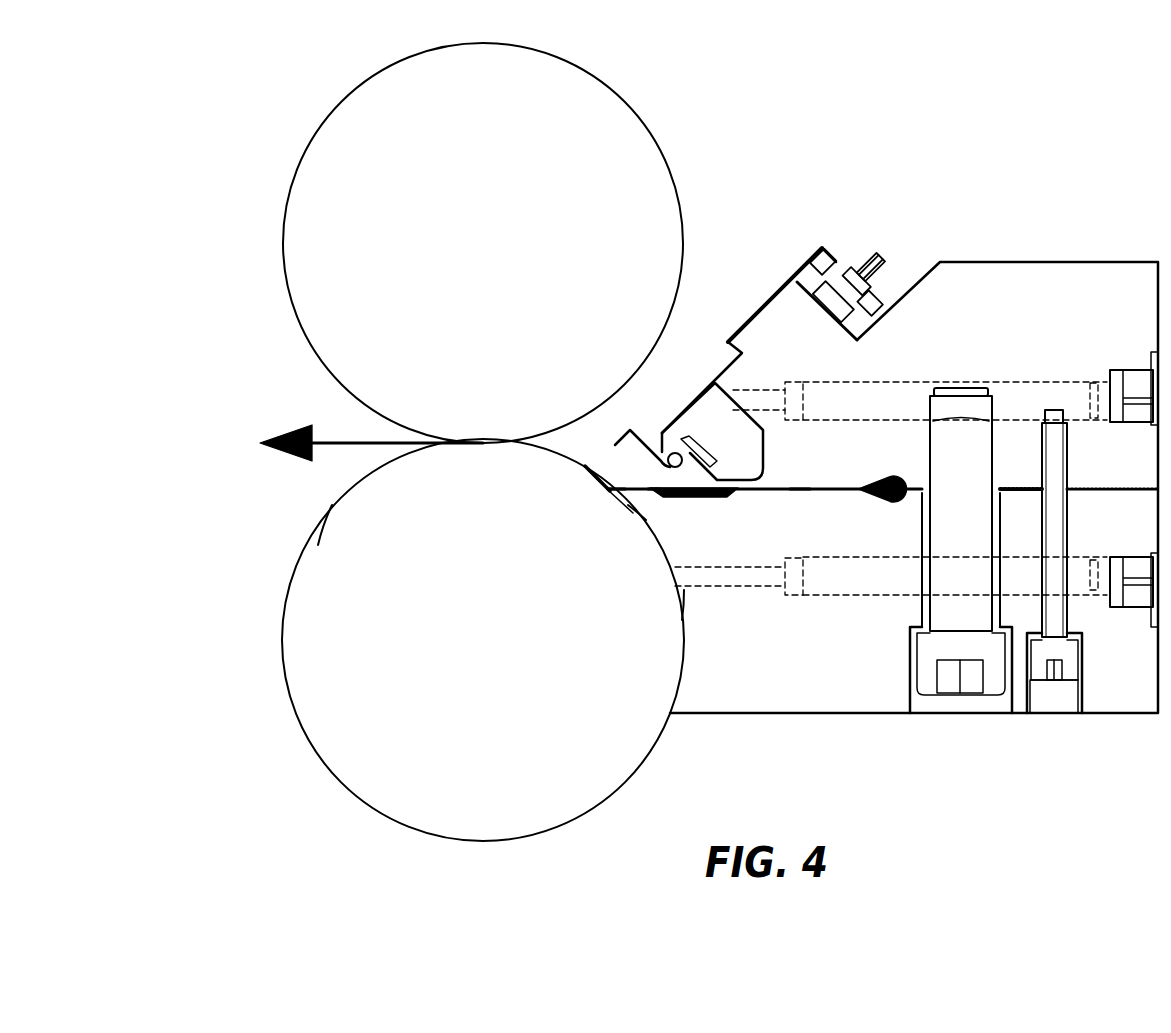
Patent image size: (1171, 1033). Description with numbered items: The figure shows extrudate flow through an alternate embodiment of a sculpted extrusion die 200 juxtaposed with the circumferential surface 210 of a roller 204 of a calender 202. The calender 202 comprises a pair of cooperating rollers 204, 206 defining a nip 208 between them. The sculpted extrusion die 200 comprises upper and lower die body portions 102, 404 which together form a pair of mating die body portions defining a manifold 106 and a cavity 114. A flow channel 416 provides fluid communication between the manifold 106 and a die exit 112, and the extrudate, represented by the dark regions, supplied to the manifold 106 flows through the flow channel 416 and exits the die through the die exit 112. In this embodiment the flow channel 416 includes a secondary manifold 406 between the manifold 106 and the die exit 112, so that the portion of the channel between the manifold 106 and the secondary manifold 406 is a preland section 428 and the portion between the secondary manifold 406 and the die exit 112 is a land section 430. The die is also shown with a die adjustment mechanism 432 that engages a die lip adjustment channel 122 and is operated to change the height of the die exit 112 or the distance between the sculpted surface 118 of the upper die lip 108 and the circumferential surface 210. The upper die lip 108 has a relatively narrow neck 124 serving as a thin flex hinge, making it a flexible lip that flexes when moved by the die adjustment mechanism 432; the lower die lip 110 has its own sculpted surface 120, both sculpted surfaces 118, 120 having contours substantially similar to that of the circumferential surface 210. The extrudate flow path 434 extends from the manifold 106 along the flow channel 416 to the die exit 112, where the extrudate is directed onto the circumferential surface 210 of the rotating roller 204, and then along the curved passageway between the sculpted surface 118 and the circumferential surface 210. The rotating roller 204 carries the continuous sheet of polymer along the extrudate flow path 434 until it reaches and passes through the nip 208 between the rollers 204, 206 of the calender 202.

The sculpted extrusion die 200 is at (1003, 160).
The calender 202 is at (424, 243).
The roller 204 is at (502, 643).
The roller 206 is at (504, 213).
The nip 208 is at (475, 420).
The circumferential surface 210 is at (323, 523).
The upper die body portion 102 is at (1059, 321).
The manifold 106 is at (887, 477).
The upper die lip 108 is at (613, 475).
The lower die lip 110 is at (638, 502).
The die exit 112 is at (583, 488).
The cavity 114 is at (901, 507).
The sculpted surface 118 is at (603, 470).
The sculpted surface 120 is at (690, 607).
The die lip adjustment channel 122 is at (653, 417).
The narrow neck 124 is at (740, 467).
The lower die body portion 404 is at (840, 641).
The secondary manifold 406 is at (723, 493).
The flow channel 416 is at (818, 463).
The preland section 428 is at (798, 500).
The land section 430 is at (650, 500).
The die adjustment mechanism 432 is at (808, 238).
The extrudate flow path 434 is at (572, 450).